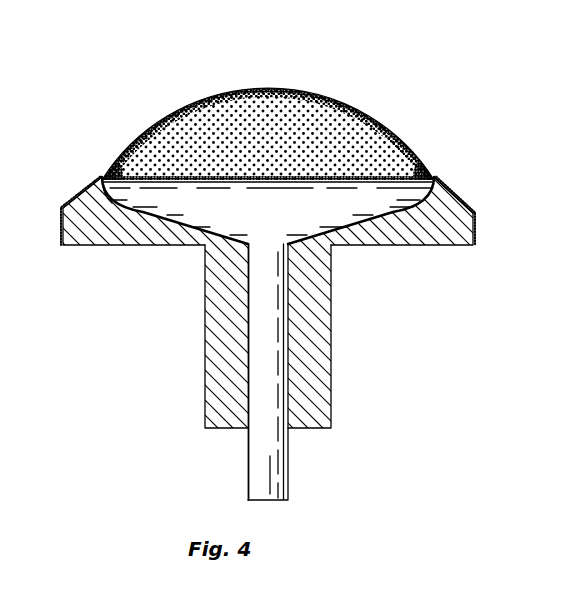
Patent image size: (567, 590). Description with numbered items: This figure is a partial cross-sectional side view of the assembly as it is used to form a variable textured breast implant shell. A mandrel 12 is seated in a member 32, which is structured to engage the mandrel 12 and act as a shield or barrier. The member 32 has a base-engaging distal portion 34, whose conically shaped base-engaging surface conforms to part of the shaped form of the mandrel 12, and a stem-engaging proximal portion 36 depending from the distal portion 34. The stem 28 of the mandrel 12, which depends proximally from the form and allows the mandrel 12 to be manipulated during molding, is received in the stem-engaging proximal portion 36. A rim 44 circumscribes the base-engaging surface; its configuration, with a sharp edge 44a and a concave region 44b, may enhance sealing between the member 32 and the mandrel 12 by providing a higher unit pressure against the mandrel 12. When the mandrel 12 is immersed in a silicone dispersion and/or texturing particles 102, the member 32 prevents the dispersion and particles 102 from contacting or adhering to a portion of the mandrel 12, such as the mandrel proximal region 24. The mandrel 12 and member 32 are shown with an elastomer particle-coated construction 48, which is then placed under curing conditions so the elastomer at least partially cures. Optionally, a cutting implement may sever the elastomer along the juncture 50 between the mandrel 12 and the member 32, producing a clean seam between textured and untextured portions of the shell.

The mandrel 12 is at (405, 125).
The proximal region 24 is at (170, 217).
The stem 28 is at (280, 334).
The member 32 is at (445, 257).
The base-engaging distal portion 34 is at (456, 187).
The stem-engaging proximal portion 36 is at (317, 378).
The rim 44 is at (88, 187).
The sharp edge 44a is at (435, 176).
The concave region 44b is at (433, 200).
The elastomer particle-coated construction 48 is at (240, 89).
The juncture 50 is at (105, 175).
The texturing particles 102 is at (355, 106).